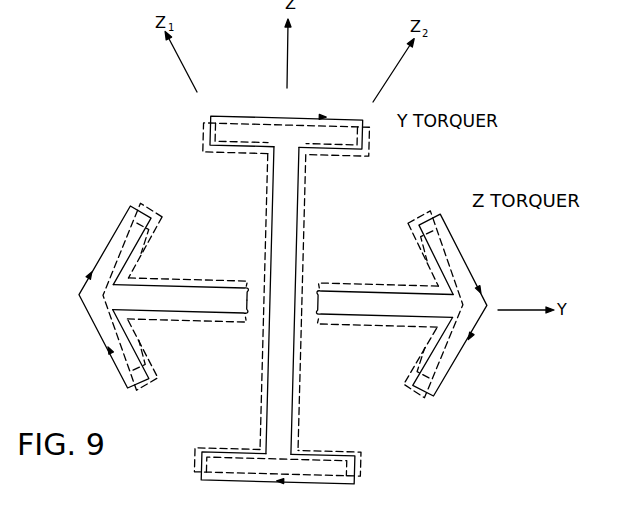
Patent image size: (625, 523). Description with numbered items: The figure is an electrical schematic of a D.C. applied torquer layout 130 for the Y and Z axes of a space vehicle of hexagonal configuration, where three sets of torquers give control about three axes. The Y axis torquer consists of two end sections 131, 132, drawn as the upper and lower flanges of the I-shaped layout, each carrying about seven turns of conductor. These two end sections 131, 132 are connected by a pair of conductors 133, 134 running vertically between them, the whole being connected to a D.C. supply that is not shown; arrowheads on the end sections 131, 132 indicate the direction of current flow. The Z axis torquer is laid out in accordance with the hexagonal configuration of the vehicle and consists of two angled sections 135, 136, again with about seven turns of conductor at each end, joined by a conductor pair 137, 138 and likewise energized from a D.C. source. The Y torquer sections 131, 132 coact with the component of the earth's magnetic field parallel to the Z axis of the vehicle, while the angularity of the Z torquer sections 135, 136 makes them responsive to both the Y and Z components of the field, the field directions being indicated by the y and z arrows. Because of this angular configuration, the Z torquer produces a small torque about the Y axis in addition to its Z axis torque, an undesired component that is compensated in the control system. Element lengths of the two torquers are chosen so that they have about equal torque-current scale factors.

The torquer coil assembly 130 is at (74, 193).
The end section 131 is at (338, 116).
The end section 132 is at (361, 479).
The conductor 133 is at (299, 384).
The conductor 134 is at (273, 360).
The section 135 is at (149, 246).
The section 136 is at (417, 248).
The conductor 137 is at (198, 287).
The conductor 138 is at (182, 316).